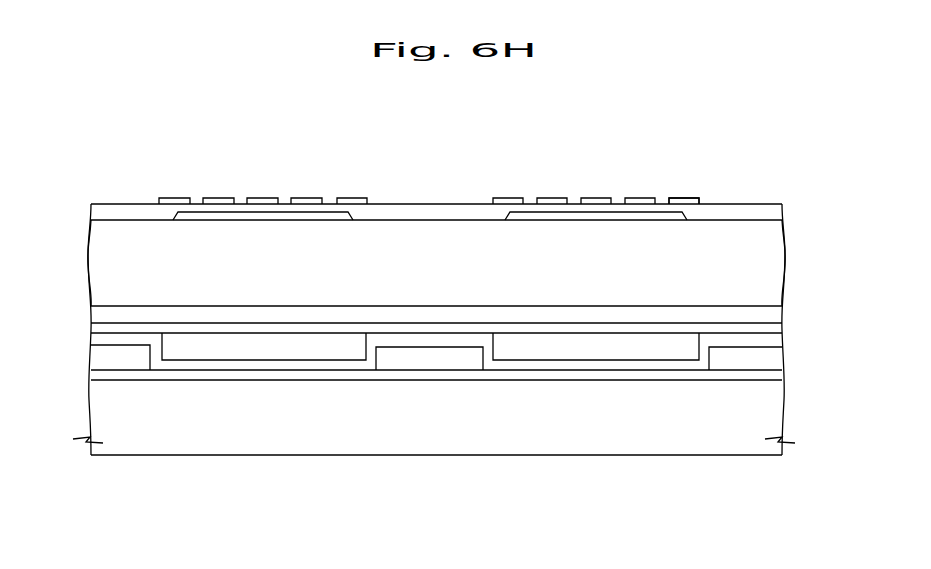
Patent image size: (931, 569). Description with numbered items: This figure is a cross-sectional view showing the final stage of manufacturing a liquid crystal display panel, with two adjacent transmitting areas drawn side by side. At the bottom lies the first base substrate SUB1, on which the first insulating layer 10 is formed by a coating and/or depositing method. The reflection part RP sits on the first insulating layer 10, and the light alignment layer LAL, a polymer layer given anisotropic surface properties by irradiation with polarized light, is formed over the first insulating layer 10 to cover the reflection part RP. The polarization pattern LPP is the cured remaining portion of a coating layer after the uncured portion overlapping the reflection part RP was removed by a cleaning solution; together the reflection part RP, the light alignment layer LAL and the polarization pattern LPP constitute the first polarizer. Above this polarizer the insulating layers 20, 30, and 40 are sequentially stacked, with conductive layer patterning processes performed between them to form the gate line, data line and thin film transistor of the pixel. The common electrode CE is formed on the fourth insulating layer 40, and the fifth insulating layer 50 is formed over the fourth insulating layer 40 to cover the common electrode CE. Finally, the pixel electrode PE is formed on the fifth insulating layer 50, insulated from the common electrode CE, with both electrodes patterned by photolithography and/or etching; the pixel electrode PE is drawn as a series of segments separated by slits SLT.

The first insulating layer 10 is at (770, 377).
The insulating layer 20 is at (768, 325).
The insulating layer 30 is at (770, 308).
The fourth insulating layer 40 is at (768, 258).
The fifth insulating layer 50 is at (768, 213).
The slit SLT is at (570, 200).
The common electrode CE is at (617, 215).
The pixel electrode PE is at (686, 202).
The light alignment layer LAL is at (768, 341).
The reflection part RP is at (103, 358).
The polarization pattern LPP is at (614, 352).
The first base substrate SUB1 is at (768, 415).